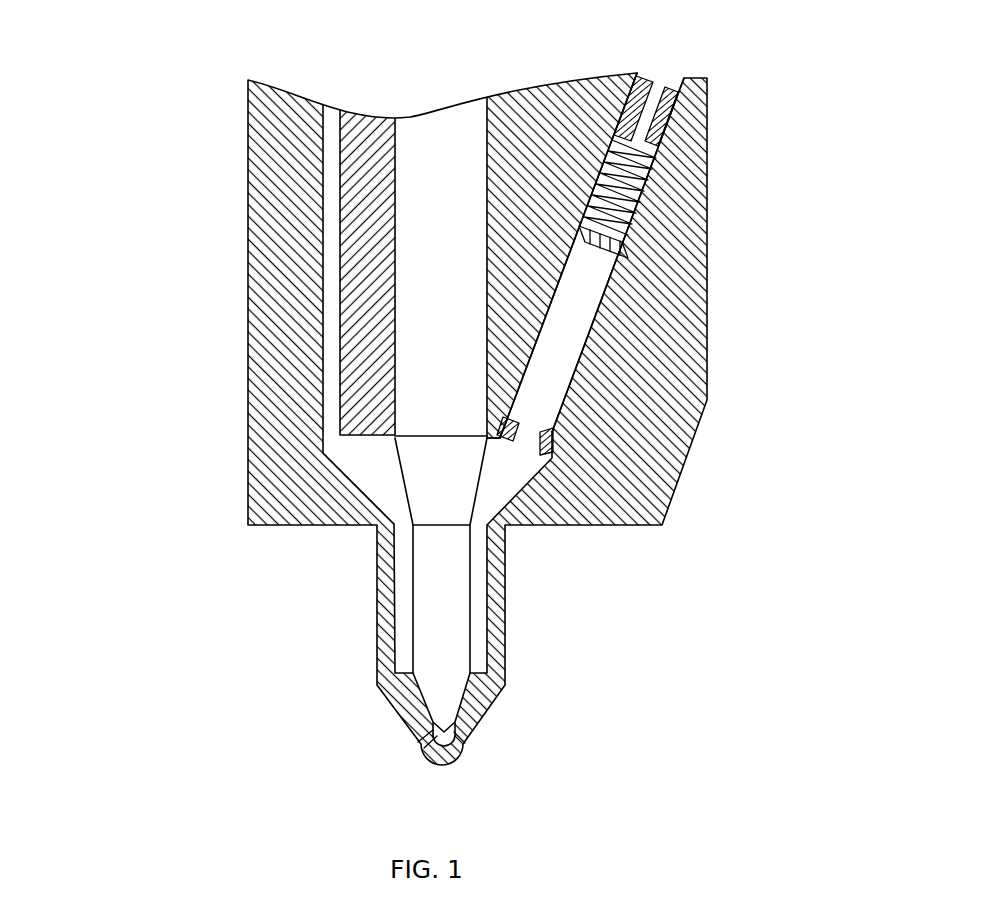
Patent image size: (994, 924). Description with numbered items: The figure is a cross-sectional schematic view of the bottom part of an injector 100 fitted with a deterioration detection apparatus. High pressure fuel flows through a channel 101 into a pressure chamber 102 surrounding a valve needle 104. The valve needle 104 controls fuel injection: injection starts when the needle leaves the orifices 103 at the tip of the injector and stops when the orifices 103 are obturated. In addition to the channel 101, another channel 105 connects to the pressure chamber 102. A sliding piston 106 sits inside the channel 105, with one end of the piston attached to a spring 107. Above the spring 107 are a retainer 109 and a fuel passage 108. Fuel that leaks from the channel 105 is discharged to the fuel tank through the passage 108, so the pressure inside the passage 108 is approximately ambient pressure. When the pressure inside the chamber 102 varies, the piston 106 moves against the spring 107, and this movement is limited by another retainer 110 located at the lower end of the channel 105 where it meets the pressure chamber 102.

The injector 100 is at (213, 204).
The channel 101 is at (333, 130).
The pressure chamber 102 is at (385, 483).
The orifices 103 is at (420, 746).
The valve needle 104 is at (468, 633).
The channel 105 is at (560, 365).
The sliding piston 106 is at (594, 252).
The spring 107 is at (643, 213).
The fuel passage 108 is at (653, 78).
The retainer 109 is at (637, 114).
The retainer 110 is at (503, 443).